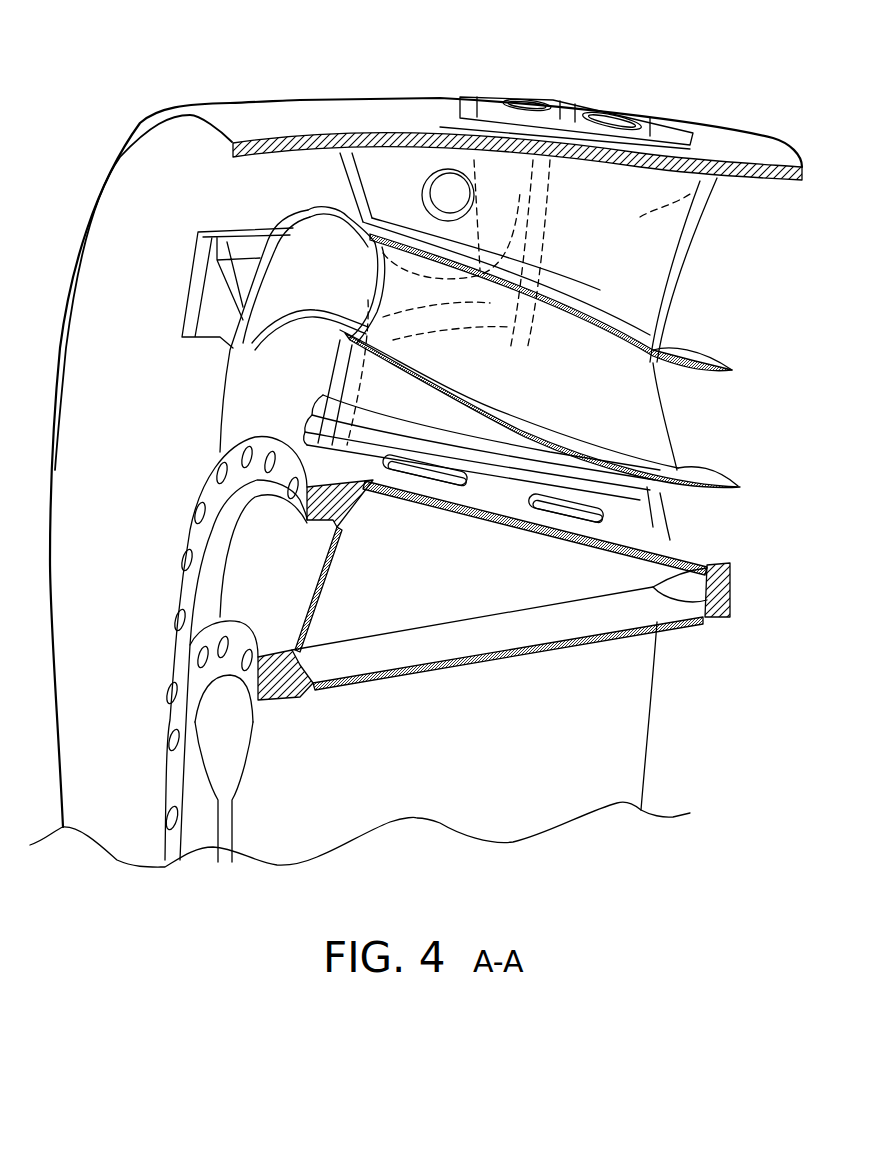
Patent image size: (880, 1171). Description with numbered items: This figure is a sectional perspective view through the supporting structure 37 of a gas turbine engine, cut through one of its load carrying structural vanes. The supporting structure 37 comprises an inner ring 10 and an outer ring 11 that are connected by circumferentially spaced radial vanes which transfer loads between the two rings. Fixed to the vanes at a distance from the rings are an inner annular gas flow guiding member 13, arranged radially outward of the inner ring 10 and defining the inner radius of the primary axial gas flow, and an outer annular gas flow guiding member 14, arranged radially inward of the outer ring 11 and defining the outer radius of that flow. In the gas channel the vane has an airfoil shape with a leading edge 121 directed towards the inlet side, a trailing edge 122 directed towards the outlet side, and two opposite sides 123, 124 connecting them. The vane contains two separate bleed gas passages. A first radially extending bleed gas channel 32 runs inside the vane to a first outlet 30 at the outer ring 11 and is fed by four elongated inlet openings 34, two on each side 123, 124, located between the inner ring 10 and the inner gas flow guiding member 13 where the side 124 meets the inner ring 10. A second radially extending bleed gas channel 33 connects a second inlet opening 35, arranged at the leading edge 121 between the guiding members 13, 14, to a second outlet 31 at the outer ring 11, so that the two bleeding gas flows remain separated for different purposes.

The inner ring 10 is at (673, 550).
The outer ring 11 is at (521, 99).
The inner annular gas flow guiding member 13 is at (705, 481).
The outer annular gas flow guiding member 14 is at (713, 360).
The first outlet 30 is at (629, 114).
The second outlet 31 is at (537, 95).
The first bleed gas channel 32 is at (683, 215).
The second bleed gas channel 33 is at (500, 188).
The elongated inlet openings 34 is at (573, 518).
The second inlet opening 35 is at (375, 278).
The supporting structure 37 is at (123, 912).
The leading edge 121 is at (380, 292).
The trailing edge 122 is at (673, 425).
The first side 123 is at (707, 207).
The second side 124 is at (677, 230).